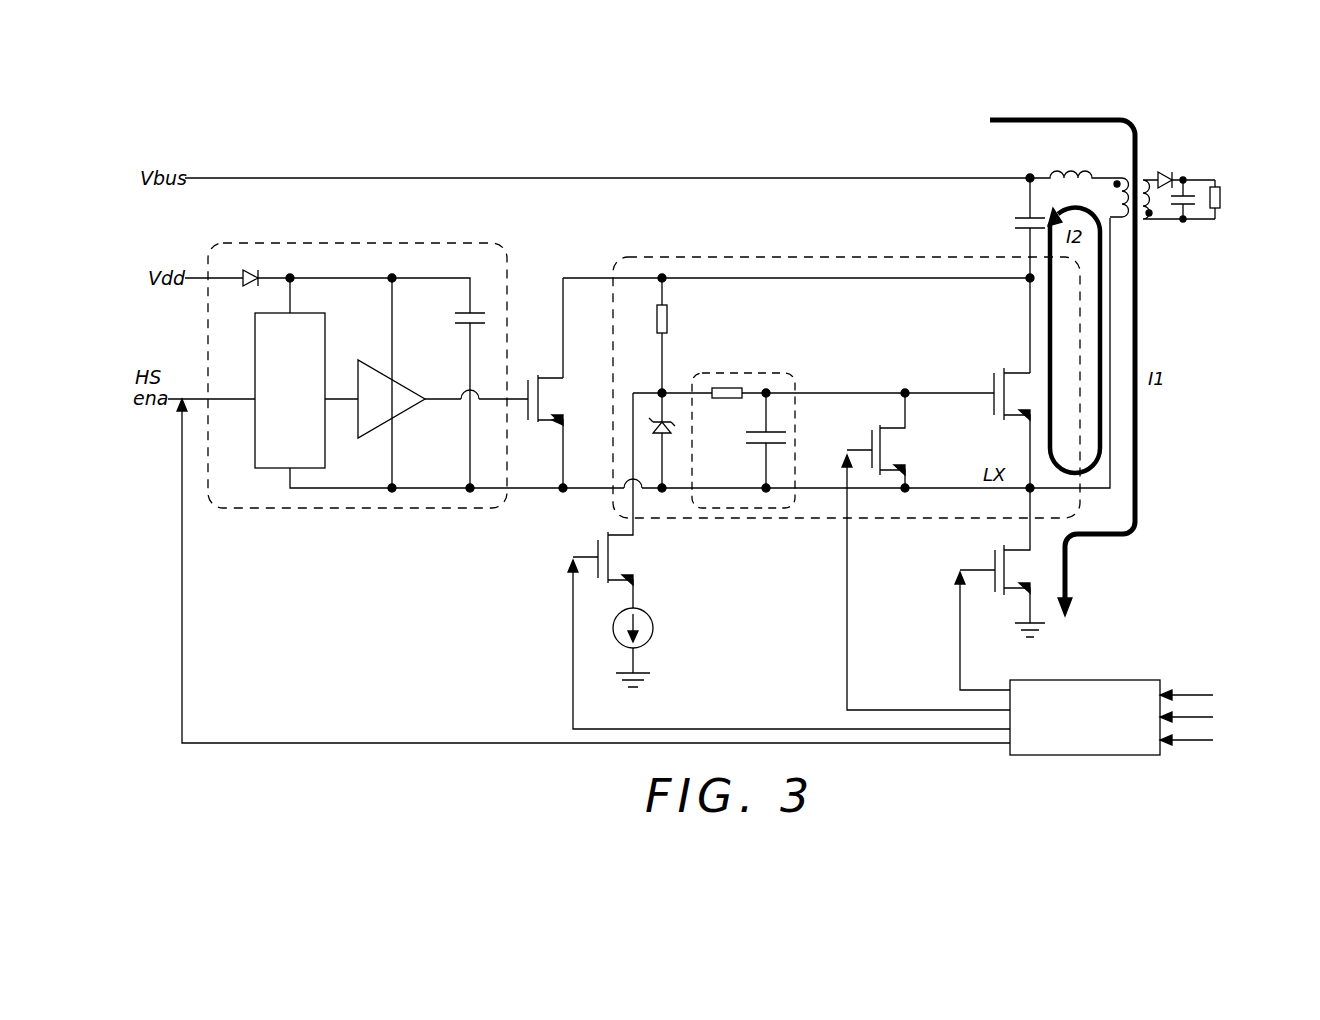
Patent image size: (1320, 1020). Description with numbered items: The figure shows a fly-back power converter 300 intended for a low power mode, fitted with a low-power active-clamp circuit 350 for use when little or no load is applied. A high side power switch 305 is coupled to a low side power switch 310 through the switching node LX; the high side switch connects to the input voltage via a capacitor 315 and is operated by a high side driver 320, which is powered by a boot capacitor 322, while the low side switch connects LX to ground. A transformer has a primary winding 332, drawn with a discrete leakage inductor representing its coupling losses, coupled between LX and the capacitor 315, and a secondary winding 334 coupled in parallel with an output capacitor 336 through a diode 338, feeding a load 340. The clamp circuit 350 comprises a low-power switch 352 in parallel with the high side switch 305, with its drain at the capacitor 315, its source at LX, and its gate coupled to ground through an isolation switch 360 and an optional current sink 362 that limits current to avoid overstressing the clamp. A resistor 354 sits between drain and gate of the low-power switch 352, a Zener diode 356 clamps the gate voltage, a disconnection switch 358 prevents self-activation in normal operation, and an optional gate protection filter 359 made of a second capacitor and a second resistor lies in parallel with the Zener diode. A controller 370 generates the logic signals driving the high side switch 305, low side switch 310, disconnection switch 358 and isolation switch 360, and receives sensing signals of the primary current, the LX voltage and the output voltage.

The power converter 300 is at (234, 116).
The high side power switch 305 is at (535, 378).
The low side power switch 310 is at (996, 594).
The capacitor C1 315 is at (1018, 238).
The high side driver 320 is at (277, 508).
The boot capacitor Cboot 322 is at (462, 328).
The primary winding 332 is at (1115, 175).
The secondary winding 334 is at (1151, 224).
The output capacitor 336 is at (1191, 222).
The diode 338 is at (1166, 172).
The load resistor 340 is at (1220, 198).
The active-clamp circuit 350 is at (625, 257).
The low-power switch LPSW 352 is at (998, 373).
The resistor R1 354 is at (675, 306).
The Zener diode D1 356 is at (652, 415).
The disconnection switch Q1 358 is at (912, 444).
The gate protection filter 359 is at (805, 380).
The isolation switch 360 is at (623, 560).
The current sink 362 is at (613, 630).
The controller 370 is at (1104, 680).